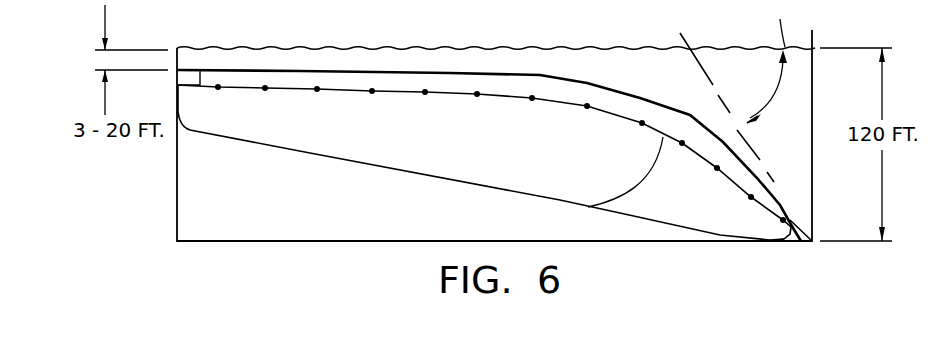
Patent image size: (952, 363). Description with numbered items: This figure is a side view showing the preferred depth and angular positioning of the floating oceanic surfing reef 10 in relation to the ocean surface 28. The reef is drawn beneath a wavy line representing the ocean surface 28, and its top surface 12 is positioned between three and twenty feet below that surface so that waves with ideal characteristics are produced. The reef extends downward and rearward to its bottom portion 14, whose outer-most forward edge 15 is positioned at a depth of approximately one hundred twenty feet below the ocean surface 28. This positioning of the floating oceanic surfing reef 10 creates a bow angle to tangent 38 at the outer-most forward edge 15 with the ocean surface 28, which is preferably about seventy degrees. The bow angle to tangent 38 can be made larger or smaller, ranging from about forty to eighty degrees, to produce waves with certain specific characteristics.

The floating oceanic surfing reef 10 is at (370, 105).
The top surface 12 is at (765, 192).
The bottom portion 14 is at (603, 180).
The outer-most forward edge 15 is at (790, 241).
The ocean surface 28 is at (378, 47).
The bow angle to tangent 38 is at (786, 76).